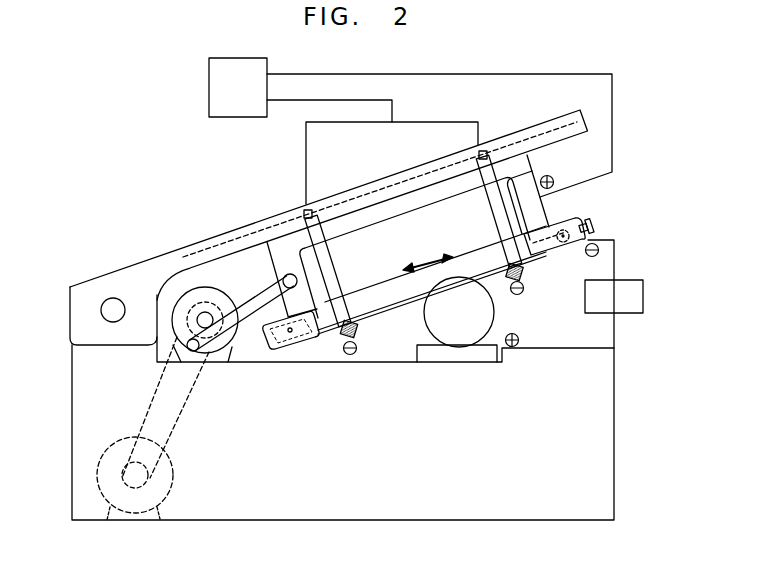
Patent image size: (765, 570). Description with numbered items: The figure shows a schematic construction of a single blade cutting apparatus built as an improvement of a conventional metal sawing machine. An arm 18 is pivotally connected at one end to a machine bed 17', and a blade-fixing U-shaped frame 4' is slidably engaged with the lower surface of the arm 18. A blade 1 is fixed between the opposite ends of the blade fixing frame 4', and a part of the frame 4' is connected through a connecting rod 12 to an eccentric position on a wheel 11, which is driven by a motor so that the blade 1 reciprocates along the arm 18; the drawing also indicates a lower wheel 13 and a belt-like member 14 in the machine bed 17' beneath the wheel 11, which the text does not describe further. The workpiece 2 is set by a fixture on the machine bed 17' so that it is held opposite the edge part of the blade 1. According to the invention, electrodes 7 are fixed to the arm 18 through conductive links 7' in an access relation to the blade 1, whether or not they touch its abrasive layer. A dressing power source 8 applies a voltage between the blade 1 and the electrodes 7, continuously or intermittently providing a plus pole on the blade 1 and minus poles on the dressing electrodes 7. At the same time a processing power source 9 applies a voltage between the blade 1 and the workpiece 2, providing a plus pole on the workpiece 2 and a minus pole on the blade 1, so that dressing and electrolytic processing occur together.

The blade 1 is at (375, 297).
The workpiece 2 is at (485, 318).
The blade-fixing U-shaped frame 4' is at (551, 205).
The dressing electrodes 7 is at (443, 302).
The conductive links 7' is at (413, 239).
The dressing power source 8 is at (209, 85).
The processing power source 9 is at (585, 299).
The wheel 11 is at (182, 302).
The connecting rod 12 is at (255, 300).
The lower pulley 13 is at (160, 485).
The connecting arm 14 is at (182, 412).
The machine bed 17' is at (364, 380).
The arm 18 is at (508, 141).